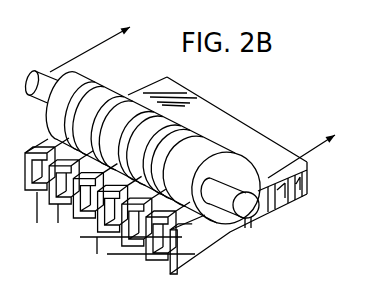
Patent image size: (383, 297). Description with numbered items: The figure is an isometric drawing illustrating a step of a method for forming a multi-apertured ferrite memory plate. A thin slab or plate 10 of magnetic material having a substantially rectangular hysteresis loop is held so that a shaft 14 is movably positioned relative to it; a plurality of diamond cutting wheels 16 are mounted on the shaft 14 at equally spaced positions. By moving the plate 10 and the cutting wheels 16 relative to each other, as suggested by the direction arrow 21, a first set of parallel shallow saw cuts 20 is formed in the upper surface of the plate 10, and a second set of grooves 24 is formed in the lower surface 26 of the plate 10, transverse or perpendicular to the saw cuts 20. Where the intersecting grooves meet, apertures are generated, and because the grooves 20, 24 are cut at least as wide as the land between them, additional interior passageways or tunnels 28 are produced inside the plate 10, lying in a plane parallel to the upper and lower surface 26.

The plate 10 is at (200, 92).
The shaft 14 is at (34, 77).
The diamond cutting wheels 16 is at (128, 96).
The saw cuts 20 is at (280, 207).
The direction of movement 21 is at (100, 44).
The second set of grooves 24 is at (73, 212).
The lower planar surface 26 is at (206, 121).
The tunnels 28 is at (36, 208).